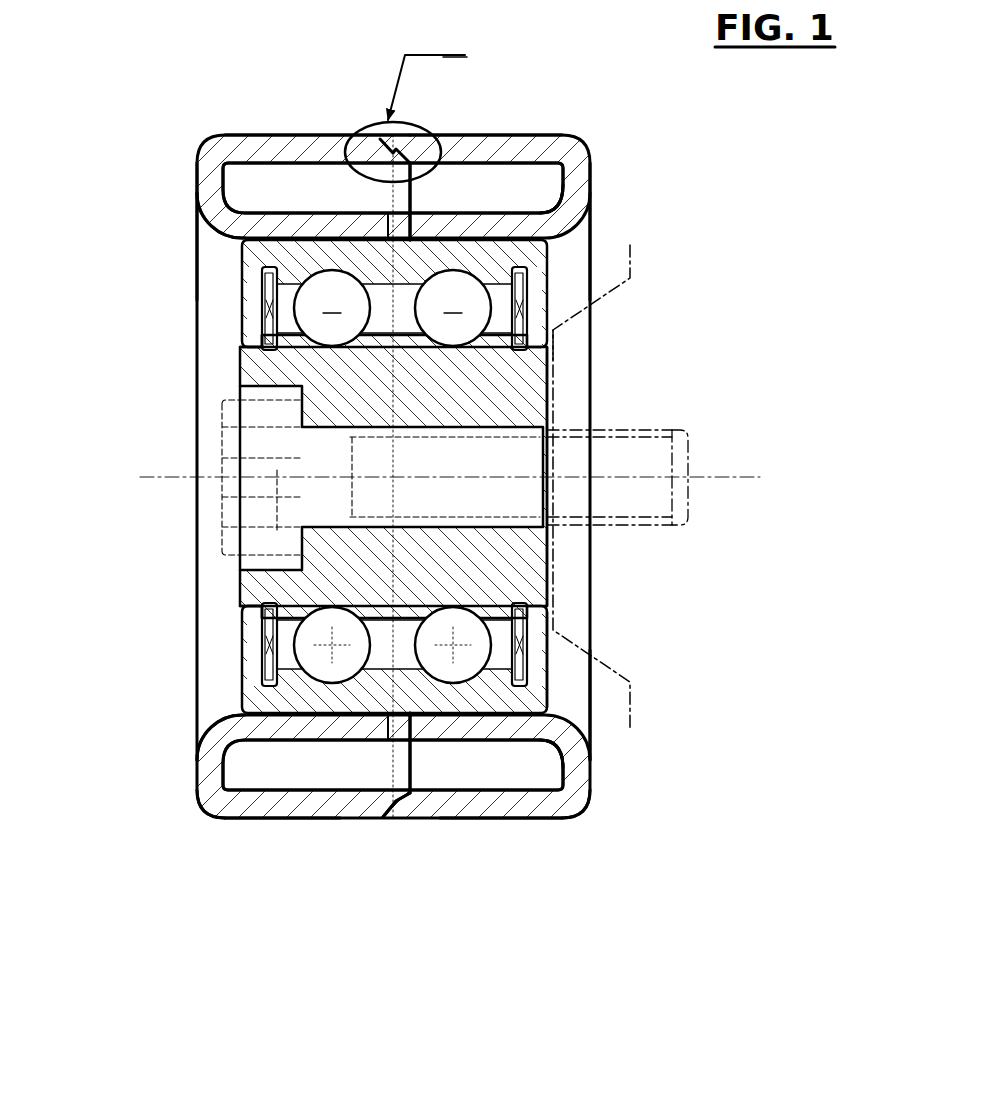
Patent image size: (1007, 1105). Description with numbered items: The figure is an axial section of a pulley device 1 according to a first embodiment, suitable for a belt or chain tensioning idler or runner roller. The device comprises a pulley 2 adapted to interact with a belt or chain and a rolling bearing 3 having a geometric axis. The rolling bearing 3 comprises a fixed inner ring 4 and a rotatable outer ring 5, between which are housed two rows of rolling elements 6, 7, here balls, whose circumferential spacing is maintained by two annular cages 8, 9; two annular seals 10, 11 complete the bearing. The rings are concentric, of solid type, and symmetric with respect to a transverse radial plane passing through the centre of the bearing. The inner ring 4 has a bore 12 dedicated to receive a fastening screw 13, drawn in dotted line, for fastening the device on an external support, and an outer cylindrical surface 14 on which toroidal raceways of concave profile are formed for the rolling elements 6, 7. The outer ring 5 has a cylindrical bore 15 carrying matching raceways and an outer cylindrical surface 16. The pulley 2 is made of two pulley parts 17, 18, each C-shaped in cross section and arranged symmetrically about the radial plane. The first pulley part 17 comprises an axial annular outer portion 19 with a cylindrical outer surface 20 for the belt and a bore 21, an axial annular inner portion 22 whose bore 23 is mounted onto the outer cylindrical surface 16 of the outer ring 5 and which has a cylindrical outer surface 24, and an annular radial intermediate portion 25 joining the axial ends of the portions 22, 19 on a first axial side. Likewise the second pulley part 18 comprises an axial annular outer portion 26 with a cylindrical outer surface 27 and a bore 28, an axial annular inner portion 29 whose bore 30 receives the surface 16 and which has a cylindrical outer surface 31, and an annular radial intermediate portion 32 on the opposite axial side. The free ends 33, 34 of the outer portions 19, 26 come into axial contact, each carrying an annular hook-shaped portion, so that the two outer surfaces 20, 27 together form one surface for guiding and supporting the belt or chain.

The pulley device 1 is at (438, 469).
The pulley 2 is at (580, 138).
The rolling bearing 3 is at (553, 298).
The inner ring 4 is at (250, 578).
The outer ring 5 is at (242, 290).
The rolling elements 6 is at (332, 308).
The rolling elements 7 is at (453, 308).
The annular cage 8 is at (263, 310).
The annular cage 9 is at (525, 635).
The annular seal 10 is at (265, 665).
The annular seal 11 is at (555, 330).
The bore 12 is at (345, 520).
The fastening screw 13 is at (685, 437).
The outer cylindrical surface 14 is at (263, 338).
The cylindrical bore 15 is at (265, 626).
The outer cylindrical surface 16 is at (248, 740).
The first pulley part 17 is at (258, 128).
The second pulley part 18 is at (545, 133).
The axial annular outer portion 19 is at (290, 817).
The cylindrical outer surface 20 is at (245, 825).
The cylindrical inner surface or bore 21 is at (240, 773).
The axial annular inner portion 22 is at (302, 238).
The cylindrical inner surface or bore 23 is at (240, 258).
The cylindrical outer surface 24 is at (240, 185).
The annular radial intermediate portion 25 is at (197, 173).
The axial annular outer portion 26 is at (507, 817).
The cylindrical outer surface 27 is at (535, 820).
The cylindrical inner surface or bore 28 is at (530, 775).
The axial annular inner portion 29 is at (500, 208).
The cylindrical inner surface or bore 30 is at (545, 680).
The cylindrical outer surface 31 is at (590, 745).
The annular radial intermediate portion 32 is at (590, 170).
The free end 33 is at (375, 817).
The free end 34 is at (412, 817).